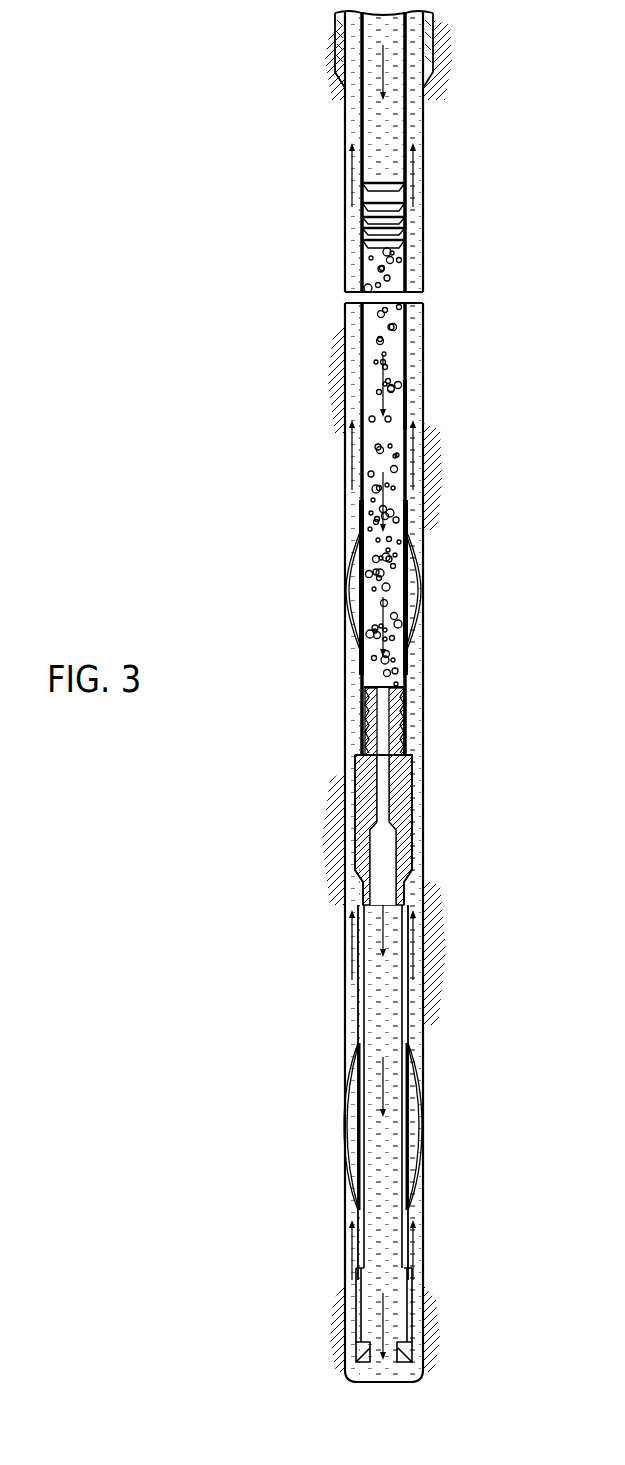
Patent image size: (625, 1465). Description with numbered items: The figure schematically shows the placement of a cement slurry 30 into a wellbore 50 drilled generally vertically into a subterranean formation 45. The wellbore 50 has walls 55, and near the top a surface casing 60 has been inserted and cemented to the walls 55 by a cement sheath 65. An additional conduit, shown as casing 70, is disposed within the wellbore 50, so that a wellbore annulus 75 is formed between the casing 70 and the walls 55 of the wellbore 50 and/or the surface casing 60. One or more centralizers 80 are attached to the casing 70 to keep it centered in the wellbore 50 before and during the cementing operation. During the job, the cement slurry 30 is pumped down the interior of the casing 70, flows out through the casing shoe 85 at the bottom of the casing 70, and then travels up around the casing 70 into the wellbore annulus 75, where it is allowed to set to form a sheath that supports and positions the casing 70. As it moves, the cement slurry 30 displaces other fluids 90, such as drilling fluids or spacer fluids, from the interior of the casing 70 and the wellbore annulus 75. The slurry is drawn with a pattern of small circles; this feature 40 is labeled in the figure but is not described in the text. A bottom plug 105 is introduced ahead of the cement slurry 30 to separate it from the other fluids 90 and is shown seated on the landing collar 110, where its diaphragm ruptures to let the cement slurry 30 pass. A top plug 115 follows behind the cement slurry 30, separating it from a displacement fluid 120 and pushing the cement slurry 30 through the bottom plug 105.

The cement slurry 30 is at (383, 379).
The gas bubbles 40 is at (386, 348).
The subterranean formation 45 is at (535, 707).
The wellbore 50 is at (428, 524).
The walls 55 is at (417, 248).
The surface casing 60 is at (436, 22).
The cement sheath 65 is at (438, 50).
The casing 70 is at (407, 405).
The wellbore annulus 75 is at (357, 498).
The centralizers 80 is at (347, 583).
The casing shoe 85 is at (345, 1302).
The other fluids 90 is at (358, 178).
The bottom plug 105 is at (368, 692).
The landing collar 110 is at (355, 790).
The top plug 115 is at (362, 228).
The displacement fluid 120 is at (388, 72).